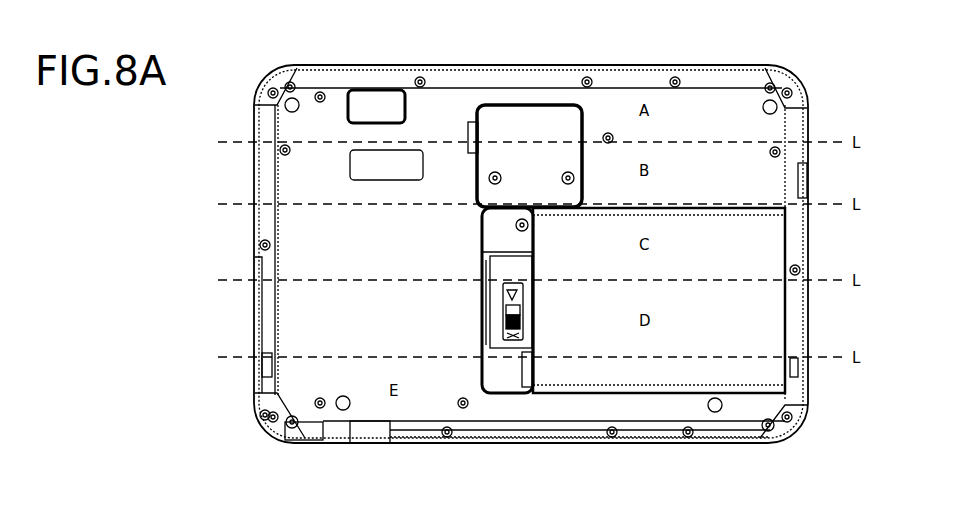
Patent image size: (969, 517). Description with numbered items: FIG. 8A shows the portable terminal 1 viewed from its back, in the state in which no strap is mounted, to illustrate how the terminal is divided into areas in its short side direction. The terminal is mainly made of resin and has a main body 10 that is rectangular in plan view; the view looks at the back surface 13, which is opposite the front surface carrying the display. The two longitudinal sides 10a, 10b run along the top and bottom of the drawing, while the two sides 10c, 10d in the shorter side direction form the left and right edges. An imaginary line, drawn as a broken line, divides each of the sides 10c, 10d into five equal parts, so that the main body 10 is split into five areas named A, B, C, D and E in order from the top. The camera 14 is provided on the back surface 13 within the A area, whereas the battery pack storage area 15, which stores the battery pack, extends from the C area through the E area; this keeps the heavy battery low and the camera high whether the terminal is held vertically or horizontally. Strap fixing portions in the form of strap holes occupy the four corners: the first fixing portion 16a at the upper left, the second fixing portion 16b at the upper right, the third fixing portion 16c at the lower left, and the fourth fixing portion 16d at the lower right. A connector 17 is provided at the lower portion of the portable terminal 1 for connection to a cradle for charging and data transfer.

The portable terminal 1 is at (818, 268).
The main body 10 is at (590, 65).
The side in the longitudinal direction (upper side) 10a is at (430, 65).
The side in the longitudinal direction (lower side) 10b is at (385, 442).
The left side in the shorter side direction 10c is at (253, 185).
The side in the shorter side direction 10d is at (810, 378).
The back surface 13 is at (688, 120).
The camera 14 is at (372, 100).
The battery pack storage area 15 is at (760, 297).
The first fixing portion 16a is at (275, 75).
The second fixing portion 16b is at (780, 75).
The third fixing portion 16c is at (280, 437).
The fourth fixing portion 16d is at (780, 433).
The connector 17 is at (507, 445).